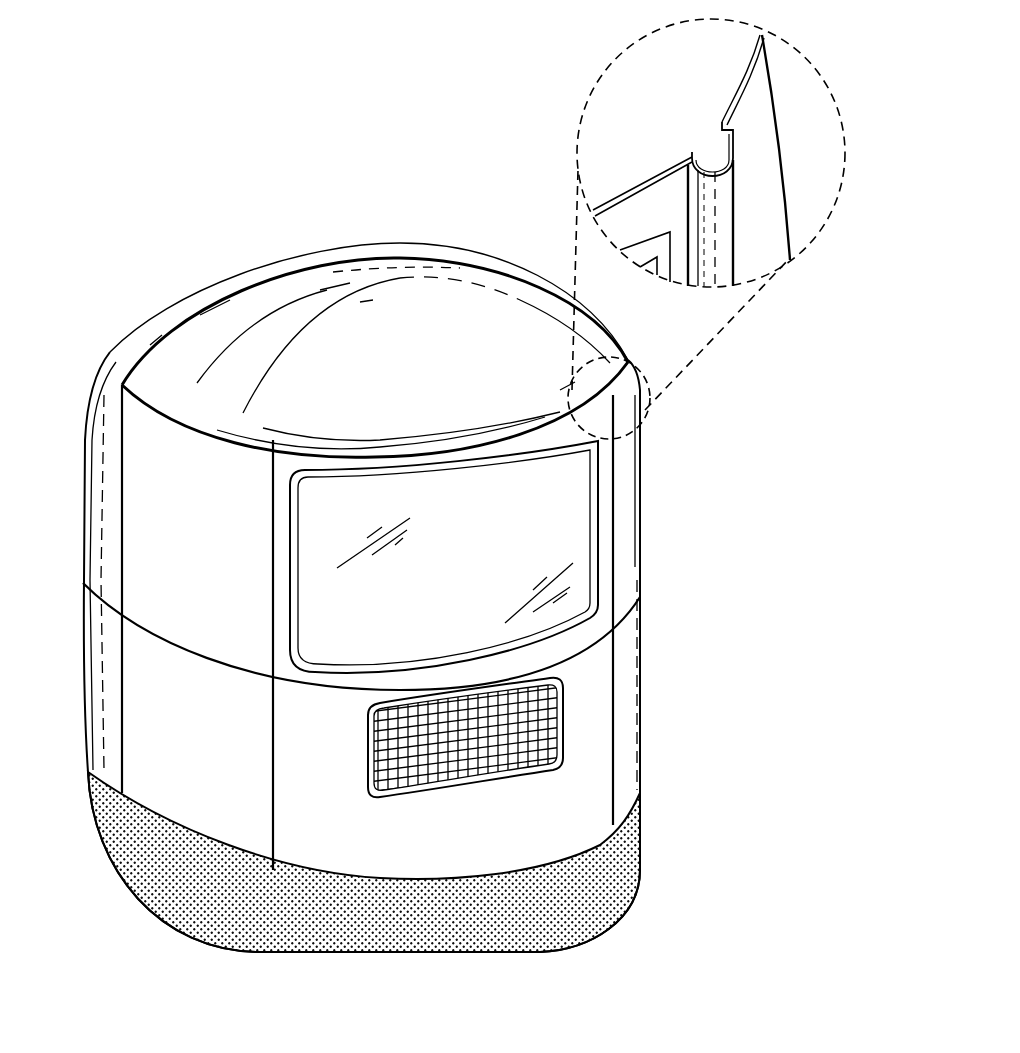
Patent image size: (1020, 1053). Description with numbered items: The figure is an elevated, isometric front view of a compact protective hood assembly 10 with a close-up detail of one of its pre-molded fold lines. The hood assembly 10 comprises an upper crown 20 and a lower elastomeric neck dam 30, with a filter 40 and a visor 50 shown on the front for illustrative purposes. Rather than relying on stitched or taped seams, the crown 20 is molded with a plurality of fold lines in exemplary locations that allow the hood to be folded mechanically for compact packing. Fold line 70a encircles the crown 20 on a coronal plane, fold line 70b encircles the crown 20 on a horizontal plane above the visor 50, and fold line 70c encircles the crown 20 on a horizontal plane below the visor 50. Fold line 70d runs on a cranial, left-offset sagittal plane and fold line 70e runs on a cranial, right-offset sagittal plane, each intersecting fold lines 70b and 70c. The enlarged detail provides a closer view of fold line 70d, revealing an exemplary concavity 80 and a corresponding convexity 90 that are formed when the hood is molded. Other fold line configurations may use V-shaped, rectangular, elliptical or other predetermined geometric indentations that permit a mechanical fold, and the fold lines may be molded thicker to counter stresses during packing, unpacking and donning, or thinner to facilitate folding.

The hood assembly 10 is at (182, 232).
The crown 20 is at (312, 254).
The neck dam 30 is at (620, 872).
The filter 40 is at (380, 762).
The visor 50 is at (485, 573).
The fold line 70a is at (478, 252).
The fold line 70b is at (160, 416).
The fold line 70c is at (634, 628).
The fold line 70d is at (613, 530).
The fold line 70e is at (272, 540).
The concavity 80 is at (700, 137).
The convexity 90 is at (725, 216).